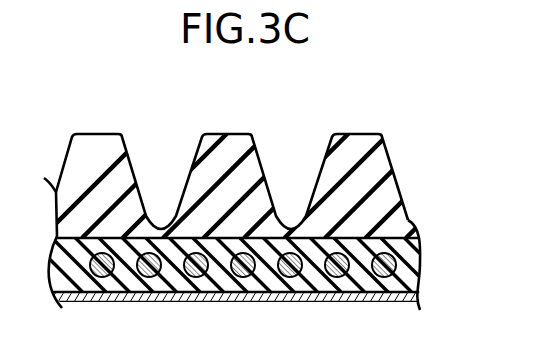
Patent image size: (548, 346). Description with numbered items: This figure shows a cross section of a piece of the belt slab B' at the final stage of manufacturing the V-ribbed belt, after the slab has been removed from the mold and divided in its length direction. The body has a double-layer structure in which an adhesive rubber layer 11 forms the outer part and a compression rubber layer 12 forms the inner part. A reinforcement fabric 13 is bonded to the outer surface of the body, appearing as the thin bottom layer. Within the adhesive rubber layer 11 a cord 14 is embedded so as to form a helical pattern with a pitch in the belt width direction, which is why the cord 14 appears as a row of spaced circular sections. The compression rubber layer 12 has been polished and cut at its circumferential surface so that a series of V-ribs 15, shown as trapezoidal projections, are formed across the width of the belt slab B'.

The adhesive rubber layer 11 is at (262, 260).
The compression rubber layer 12 is at (279, 194).
The reinforcement fabric 13 is at (405, 300).
The cord 14 is at (397, 270).
The V-ribs 15 is at (101, 150).
The belt slab B' is at (425, 129).